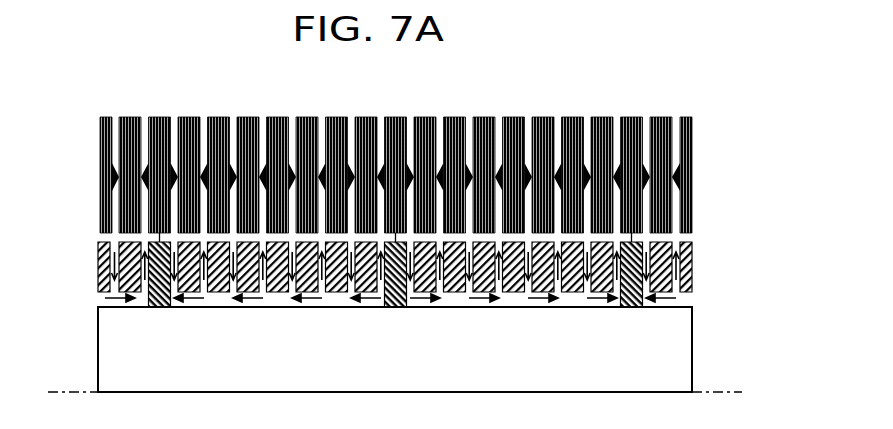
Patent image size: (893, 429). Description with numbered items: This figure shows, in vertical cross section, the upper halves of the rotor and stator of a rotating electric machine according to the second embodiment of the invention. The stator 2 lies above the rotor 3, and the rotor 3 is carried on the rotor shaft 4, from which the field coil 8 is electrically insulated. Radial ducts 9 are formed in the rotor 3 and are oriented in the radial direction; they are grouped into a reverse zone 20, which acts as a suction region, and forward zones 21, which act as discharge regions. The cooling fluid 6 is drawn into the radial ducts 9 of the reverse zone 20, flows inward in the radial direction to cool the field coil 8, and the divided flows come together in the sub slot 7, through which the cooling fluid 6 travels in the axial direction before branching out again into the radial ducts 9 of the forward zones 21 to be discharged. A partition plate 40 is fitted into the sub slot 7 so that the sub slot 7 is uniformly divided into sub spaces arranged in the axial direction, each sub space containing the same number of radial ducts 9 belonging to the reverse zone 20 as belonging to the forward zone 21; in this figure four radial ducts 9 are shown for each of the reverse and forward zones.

The stator 2 is at (97, 117).
The rotor 3 is at (97, 245).
The rotor shaft 4 is at (677, 345).
The cooling fluid 6 is at (307, 296).
The sub slot 7 is at (682, 296).
The field coil 8 is at (577, 297).
The radial ducts 9 is at (497, 286).
The reverse zone 20 is at (273, 109).
The forward zone 21 is at (268, 109).
The partition plate 40 is at (396, 307).